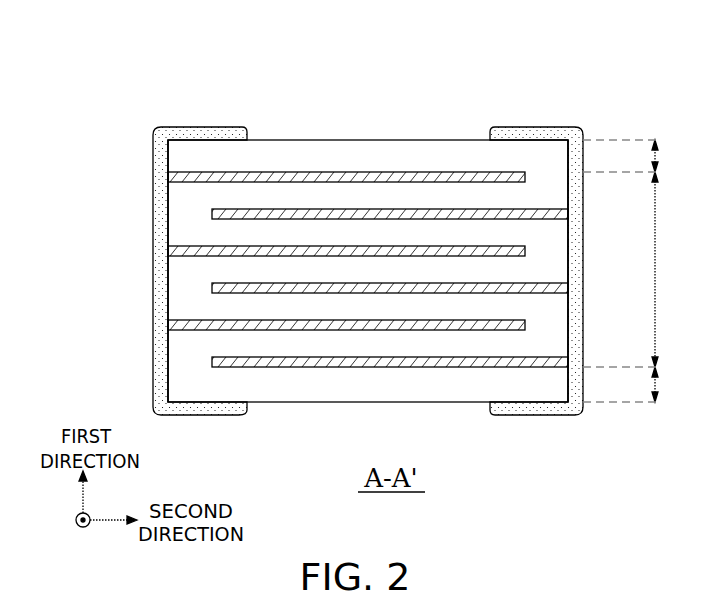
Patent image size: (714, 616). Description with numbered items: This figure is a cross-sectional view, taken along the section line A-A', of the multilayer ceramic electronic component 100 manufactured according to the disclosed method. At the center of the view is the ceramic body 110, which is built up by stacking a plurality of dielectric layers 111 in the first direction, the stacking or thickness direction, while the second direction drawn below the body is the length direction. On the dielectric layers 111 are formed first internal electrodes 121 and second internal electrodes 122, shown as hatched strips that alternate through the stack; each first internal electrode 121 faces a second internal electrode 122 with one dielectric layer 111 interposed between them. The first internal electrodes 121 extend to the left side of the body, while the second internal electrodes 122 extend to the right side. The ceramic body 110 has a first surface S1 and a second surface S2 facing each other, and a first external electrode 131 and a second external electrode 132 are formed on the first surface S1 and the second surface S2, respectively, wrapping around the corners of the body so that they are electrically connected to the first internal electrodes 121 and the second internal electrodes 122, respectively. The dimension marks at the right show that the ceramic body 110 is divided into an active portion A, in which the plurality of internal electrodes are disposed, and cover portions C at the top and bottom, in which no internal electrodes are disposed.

The multilayer ceramic electronic component 100 is at (291, 46).
The ceramic body 110 is at (375, 140).
The dielectric layer 111 is at (310, 200).
The first internal electrode 121 is at (262, 175).
The second internal electrode 122 is at (475, 214).
The first external electrode 131 is at (198, 128).
The second external electrode 132 is at (538, 128).
The first surface S1 is at (167, 218).
The second surface S2 is at (575, 248).
The active portion A is at (663, 269).
The cover portion C is at (628, 271).